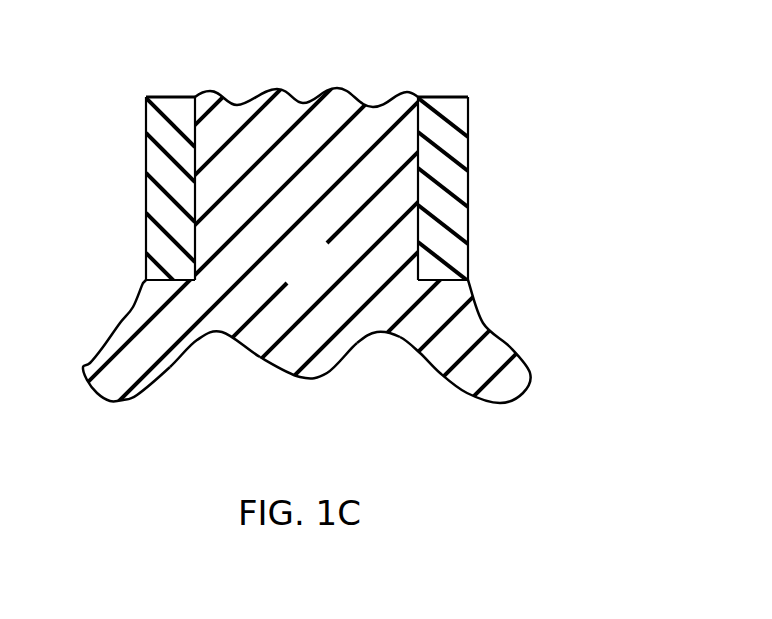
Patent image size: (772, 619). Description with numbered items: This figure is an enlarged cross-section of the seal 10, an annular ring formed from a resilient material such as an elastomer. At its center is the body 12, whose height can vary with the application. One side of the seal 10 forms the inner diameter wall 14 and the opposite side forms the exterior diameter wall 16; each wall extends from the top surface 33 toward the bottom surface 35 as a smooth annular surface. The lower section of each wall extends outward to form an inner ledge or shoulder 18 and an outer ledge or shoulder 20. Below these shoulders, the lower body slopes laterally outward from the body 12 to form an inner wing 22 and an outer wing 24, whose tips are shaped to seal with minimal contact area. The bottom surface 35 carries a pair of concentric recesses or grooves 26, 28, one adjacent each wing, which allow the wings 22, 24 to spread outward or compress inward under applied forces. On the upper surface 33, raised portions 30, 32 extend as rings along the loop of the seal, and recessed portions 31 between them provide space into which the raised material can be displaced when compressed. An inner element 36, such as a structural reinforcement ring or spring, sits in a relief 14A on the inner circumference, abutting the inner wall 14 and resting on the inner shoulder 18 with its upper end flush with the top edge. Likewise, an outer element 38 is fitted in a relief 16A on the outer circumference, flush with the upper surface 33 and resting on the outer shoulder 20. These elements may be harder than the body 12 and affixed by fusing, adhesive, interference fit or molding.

The seal 10 is at (565, 100).
The body 12 is at (322, 278).
The inner diameter wall 14 is at (194, 96).
The relief 14A is at (195, 198).
The exterior diameter wall 16 is at (418, 96).
The relief 16A is at (420, 226).
The inner ledge or shoulder 18 is at (152, 278).
The outer ledge or shoulder 20 is at (430, 278).
The inner wing 22 is at (110, 380).
The outer wing 24 is at (515, 375).
The recess or groove 26 is at (224, 334).
The recess or groove 28 is at (379, 334).
The raised portion 30 is at (277, 89).
The recessed portions 31 is at (238, 103).
The raised portion 32 is at (338, 87).
The top surface 33 is at (360, 104).
The bottom surface 35 is at (313, 378).
The inner element 36 is at (146, 147).
The outer element 38 is at (462, 188).